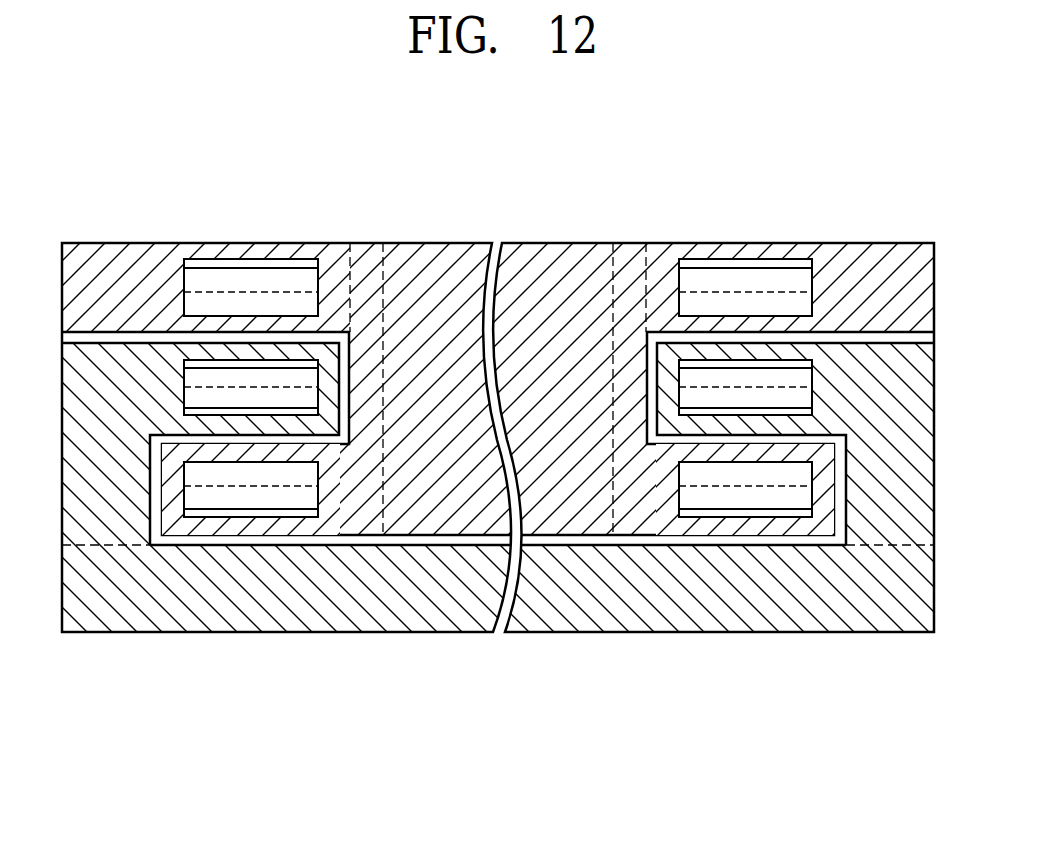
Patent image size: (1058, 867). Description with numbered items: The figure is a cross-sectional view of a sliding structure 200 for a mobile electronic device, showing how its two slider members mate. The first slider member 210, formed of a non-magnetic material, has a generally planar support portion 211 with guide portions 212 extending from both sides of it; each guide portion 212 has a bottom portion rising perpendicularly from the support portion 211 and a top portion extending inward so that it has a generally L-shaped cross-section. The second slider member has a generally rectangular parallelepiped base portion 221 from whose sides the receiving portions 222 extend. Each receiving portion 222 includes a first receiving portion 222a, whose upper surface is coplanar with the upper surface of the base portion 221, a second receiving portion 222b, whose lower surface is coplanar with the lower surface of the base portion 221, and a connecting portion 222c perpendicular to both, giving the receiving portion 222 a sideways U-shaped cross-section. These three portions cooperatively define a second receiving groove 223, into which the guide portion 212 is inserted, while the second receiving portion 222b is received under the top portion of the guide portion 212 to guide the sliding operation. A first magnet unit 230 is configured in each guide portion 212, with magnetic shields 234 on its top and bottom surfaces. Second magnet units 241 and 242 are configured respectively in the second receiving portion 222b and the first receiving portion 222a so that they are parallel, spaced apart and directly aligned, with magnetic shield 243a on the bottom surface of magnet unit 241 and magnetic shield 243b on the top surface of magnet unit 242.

The sliding structure 200 is at (818, 104).
The first slider member 210 is at (418, 655).
The support portion 211 is at (330, 613).
The guide portion 212 is at (113, 517).
The base portion 221 is at (428, 262).
The receiving portion 222 is at (466, 238).
The first receiving portion 222a is at (663, 257).
The second receiving portion 222b is at (667, 507).
The connecting portion 222c is at (633, 258).
The second receiving groove 223 is at (650, 392).
The first magnet unit 230 is at (798, 380).
The magnetic shield 234 is at (767, 367).
The second magnet unit 241 is at (777, 500).
The second magnet unit 242 is at (770, 267).
The magnetic shield 243a is at (738, 510).
The magnetic shield 243b is at (713, 263).